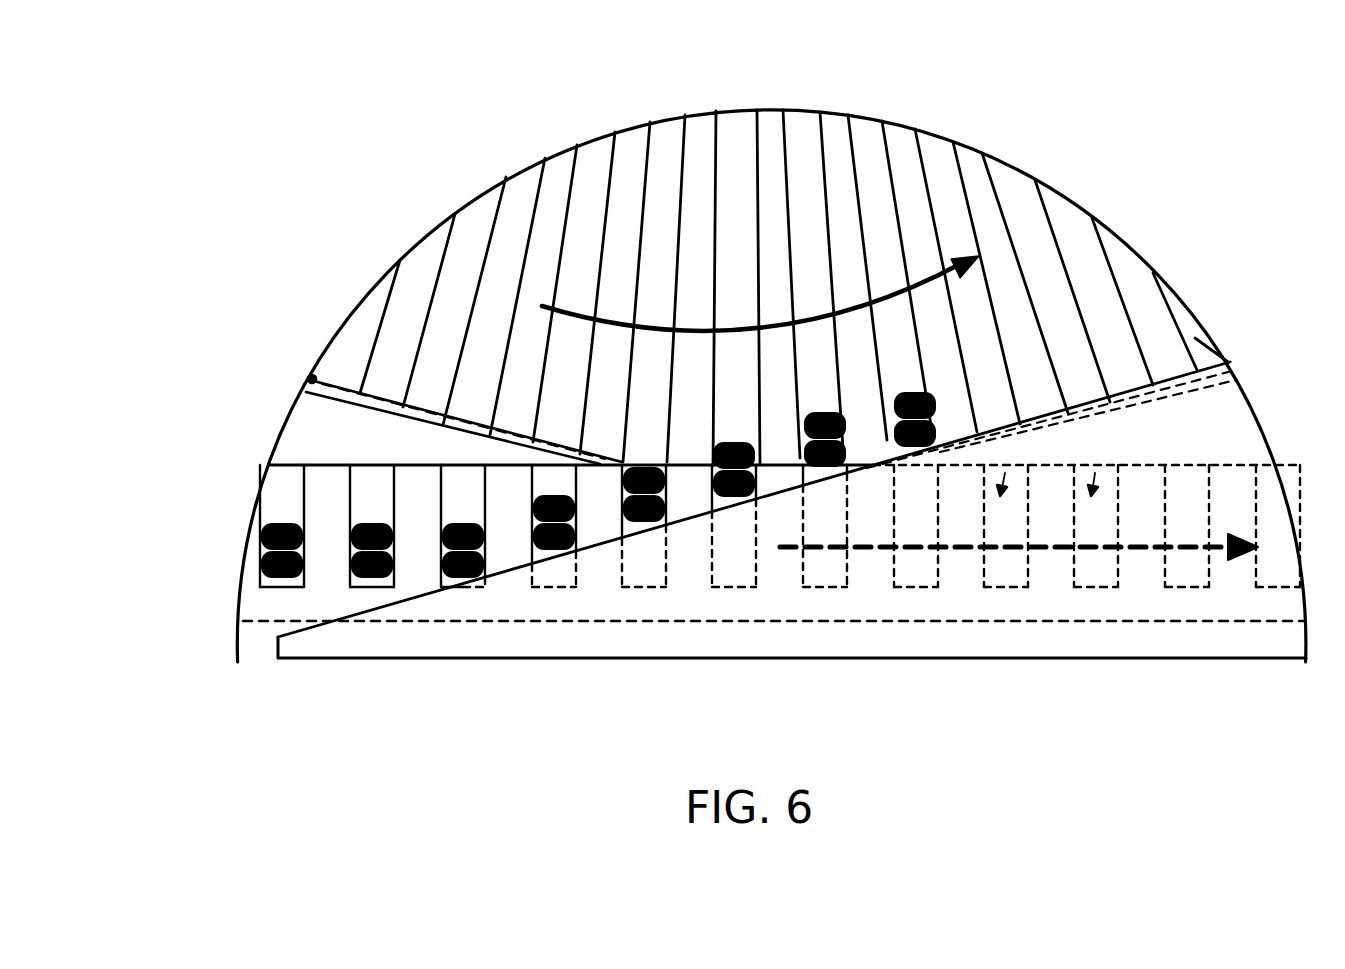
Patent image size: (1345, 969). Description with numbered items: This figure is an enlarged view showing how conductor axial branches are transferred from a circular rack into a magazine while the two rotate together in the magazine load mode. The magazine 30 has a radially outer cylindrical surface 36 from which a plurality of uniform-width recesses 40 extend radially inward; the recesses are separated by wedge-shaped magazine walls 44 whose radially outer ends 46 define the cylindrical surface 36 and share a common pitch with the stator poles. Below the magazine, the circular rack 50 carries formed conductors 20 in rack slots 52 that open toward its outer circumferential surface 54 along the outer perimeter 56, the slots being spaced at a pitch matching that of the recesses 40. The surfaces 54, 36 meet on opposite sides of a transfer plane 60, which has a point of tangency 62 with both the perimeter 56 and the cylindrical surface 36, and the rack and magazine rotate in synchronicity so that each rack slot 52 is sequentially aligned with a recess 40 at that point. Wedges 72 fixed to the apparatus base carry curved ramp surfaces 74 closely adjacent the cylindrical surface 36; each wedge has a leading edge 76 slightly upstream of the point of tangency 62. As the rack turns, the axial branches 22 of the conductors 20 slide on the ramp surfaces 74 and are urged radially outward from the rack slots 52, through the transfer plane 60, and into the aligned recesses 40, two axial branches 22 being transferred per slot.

The magazine 30 is at (1028, 171).
The recesses 40 is at (728, 127).
The magazine walls 44 is at (627, 158).
The transfer plane 60 is at (290, 466).
The radially outer ends 46 is at (367, 459).
The wedges 72 is at (438, 643).
The outer circumferential surface 54 is at (1227, 466).
The outer perimeter 56 is at (1213, 427).
The cylindrical surface 36 is at (422, 436).
The rack slots 52 is at (352, 540).
The conductor 20 is at (300, 527).
The axial branches 22 is at (262, 558).
The circular rack 50 is at (243, 592).
The leading edge 76 is at (282, 629).
The ramp surfaces 74 is at (778, 486).
The point of tangency 62 is at (723, 472).